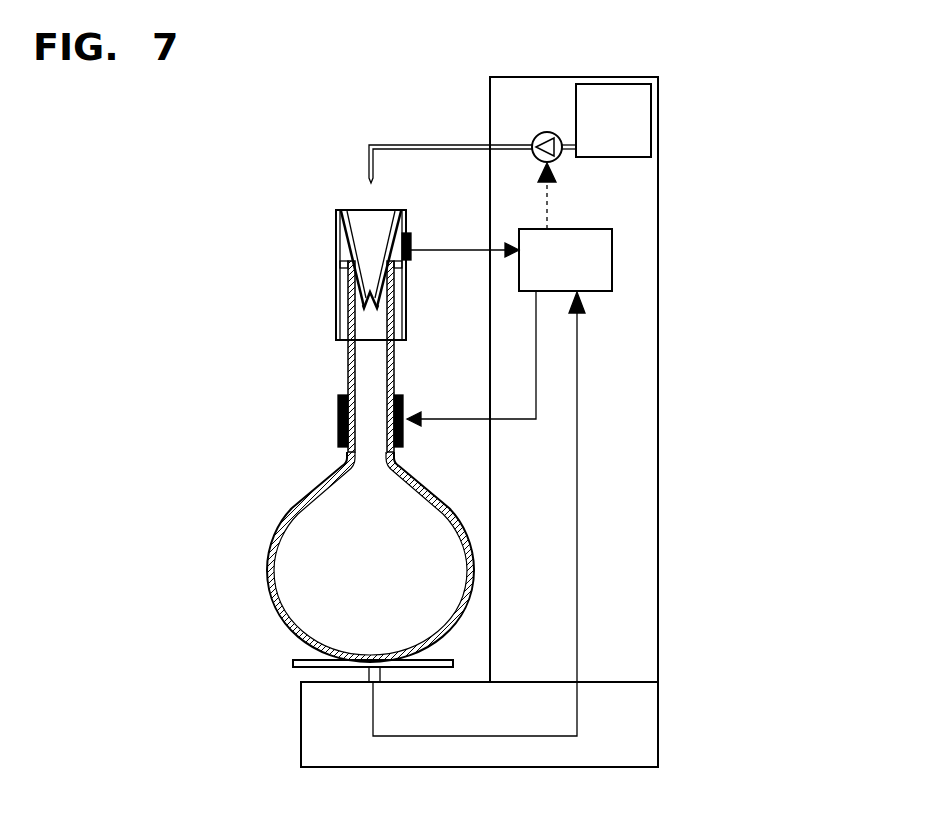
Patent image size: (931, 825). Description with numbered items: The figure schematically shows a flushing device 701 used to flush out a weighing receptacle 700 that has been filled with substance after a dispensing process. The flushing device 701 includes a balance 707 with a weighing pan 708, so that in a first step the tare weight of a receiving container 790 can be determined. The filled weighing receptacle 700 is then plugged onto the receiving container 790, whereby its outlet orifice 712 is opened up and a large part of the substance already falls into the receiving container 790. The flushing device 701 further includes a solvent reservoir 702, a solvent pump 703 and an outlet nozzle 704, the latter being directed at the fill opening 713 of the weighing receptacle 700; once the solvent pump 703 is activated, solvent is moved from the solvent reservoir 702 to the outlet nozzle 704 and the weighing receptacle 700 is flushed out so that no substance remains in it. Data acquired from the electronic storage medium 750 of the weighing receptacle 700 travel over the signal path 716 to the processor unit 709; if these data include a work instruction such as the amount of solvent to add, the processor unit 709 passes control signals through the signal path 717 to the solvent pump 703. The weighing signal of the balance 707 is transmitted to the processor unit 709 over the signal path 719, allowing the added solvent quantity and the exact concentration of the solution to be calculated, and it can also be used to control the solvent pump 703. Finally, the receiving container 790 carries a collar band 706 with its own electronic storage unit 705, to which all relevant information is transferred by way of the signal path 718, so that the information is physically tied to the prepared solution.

The weighing receptacle 700 is at (295, 343).
The flushing device 701 is at (627, 348).
The solvent reservoir 702 is at (620, 124).
The solvent pump 703 is at (382, 120).
The outlet nozzle 704 is at (365, 170).
The electronic storage unit 705 is at (393, 421).
The collar band 706 is at (338, 422).
The balance 707 is at (325, 721).
The weighing pan 708 is at (370, 672).
The processor unit 709 is at (556, 262).
The outlet orifice 712 is at (366, 306).
The fill opening 713 is at (297, 253).
The signal path 716 is at (460, 244).
The signal path 717 is at (565, 196).
The signal path 718 is at (471, 358).
The signal path 719 is at (479, 515).
The electronic storage medium 750 is at (398, 242).
The receiving container 790 is at (352, 537).